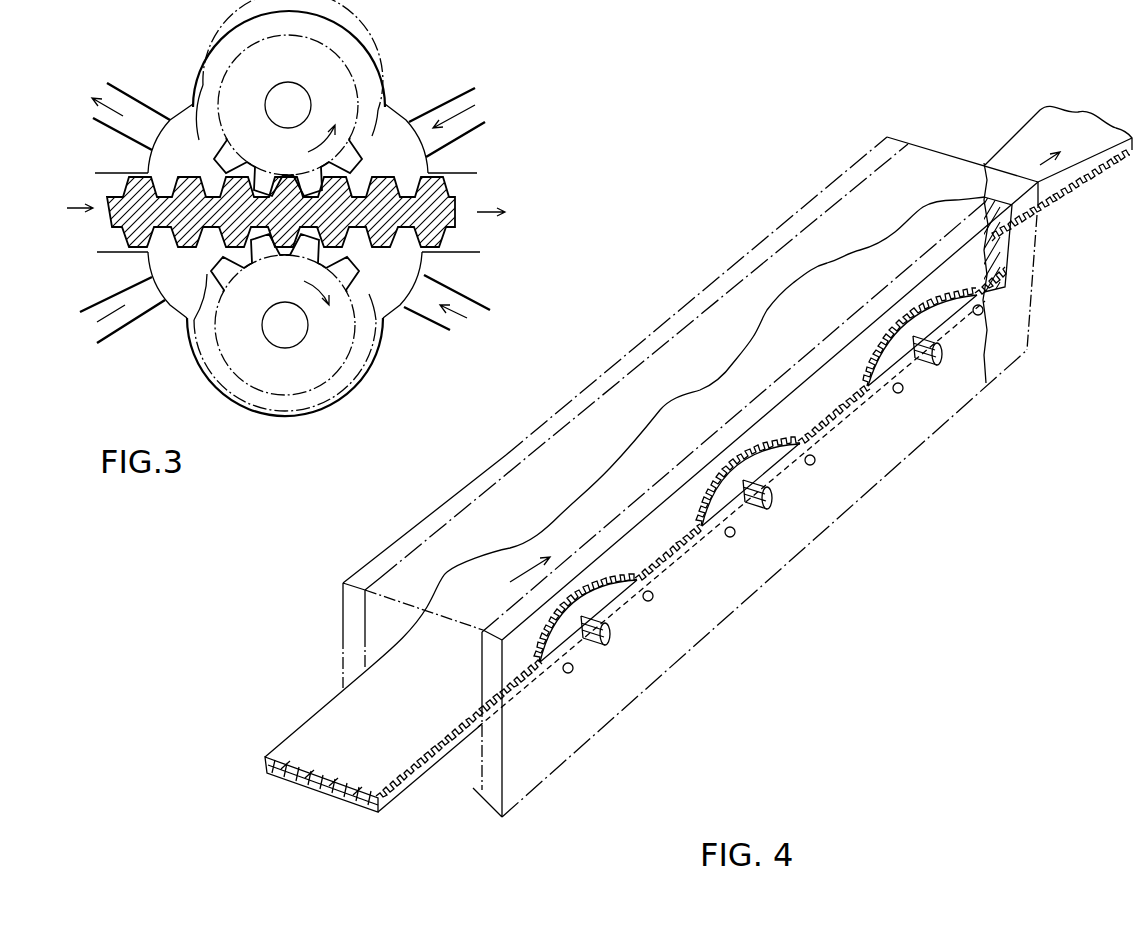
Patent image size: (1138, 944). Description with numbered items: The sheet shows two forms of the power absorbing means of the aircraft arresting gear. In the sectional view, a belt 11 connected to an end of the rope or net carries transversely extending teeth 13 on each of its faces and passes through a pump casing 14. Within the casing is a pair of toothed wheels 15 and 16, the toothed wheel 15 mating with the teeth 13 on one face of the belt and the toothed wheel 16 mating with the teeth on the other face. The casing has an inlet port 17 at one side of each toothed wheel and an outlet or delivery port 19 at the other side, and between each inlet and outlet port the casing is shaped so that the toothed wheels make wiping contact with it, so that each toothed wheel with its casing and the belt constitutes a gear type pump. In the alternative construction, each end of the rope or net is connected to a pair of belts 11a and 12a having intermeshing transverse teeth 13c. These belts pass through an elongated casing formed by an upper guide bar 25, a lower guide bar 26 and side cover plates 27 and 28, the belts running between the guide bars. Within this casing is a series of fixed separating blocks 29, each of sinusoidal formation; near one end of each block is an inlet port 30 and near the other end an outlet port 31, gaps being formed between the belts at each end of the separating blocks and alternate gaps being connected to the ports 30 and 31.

In FIG. 3, the belt 11 is at (213, 223).
In FIG. 3, the teeth 13 is at (425, 188).
In FIG. 3, the pump casing 14 is at (243, 410).
In FIG. 3, the toothed wheel 15 is at (342, 137).
In FIG. 3, the toothed wheel 16 is at (227, 315).
In FIG. 3, the inlet port 17 is at (462, 130).
In FIG. 3, the outlet or delivery port 19 is at (128, 104).
In FIG. 4, the belt 11a is at (313, 725).
In FIG. 4, the belt 12a is at (378, 812).
In FIG. 4, the intermeshing transverse teeth 13c is at (407, 788).
In FIG. 4, the upper guide bar 25 is at (395, 568).
In FIG. 4, the lower guide bar 26 is at (507, 795).
In FIG. 4, the side cover plate 27 is at (604, 706).
In FIG. 4, the side cover plate 28 is at (462, 493).
In FIG. 4, the fixed separating block 29 is at (617, 602).
In FIG. 4, the inlet port 30 is at (577, 667).
In FIG. 4, the outlet port 31 is at (653, 596).